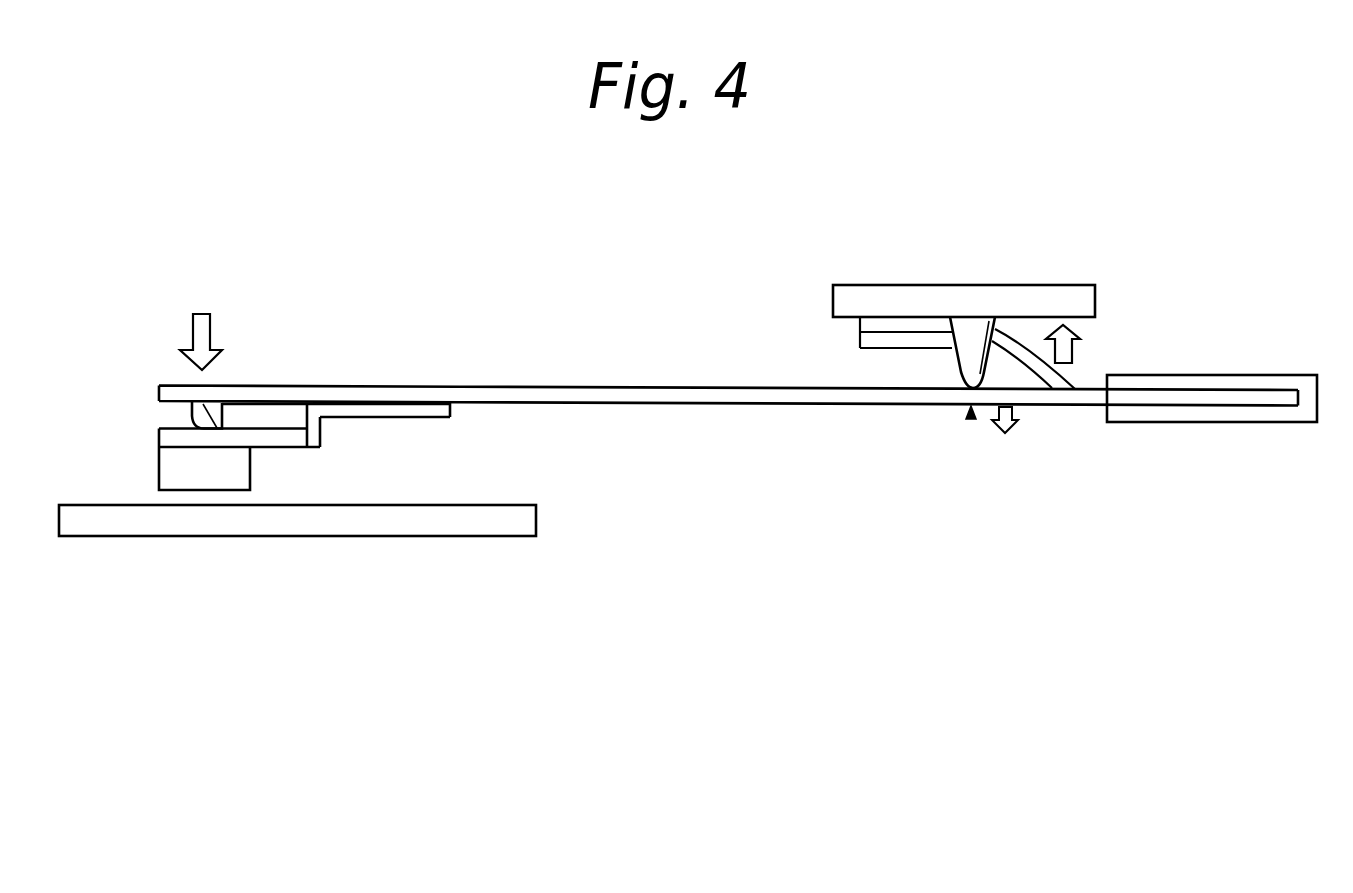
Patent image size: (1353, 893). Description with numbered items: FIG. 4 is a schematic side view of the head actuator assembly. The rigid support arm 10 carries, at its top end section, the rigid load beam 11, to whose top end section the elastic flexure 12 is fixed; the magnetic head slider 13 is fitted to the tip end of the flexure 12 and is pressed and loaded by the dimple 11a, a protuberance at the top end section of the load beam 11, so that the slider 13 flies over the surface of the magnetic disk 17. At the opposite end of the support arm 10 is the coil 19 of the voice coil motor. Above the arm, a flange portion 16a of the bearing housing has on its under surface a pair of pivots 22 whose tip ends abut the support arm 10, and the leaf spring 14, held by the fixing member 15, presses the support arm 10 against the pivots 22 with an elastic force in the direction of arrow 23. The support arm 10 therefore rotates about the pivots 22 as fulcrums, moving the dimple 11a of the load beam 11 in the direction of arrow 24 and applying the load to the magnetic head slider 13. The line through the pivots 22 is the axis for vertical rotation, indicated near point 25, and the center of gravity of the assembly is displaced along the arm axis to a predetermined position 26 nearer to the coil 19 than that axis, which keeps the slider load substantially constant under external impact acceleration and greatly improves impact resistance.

The support arm 10 is at (727, 395).
The load beam 11 is at (395, 393).
The dimple 11a is at (207, 415).
The flexure 12 is at (297, 440).
The magnetic head slider 13 is at (180, 470).
The leaf spring 14 is at (867, 338).
The fixing member 15 is at (867, 327).
The flange portion 16a is at (1062, 295).
The magnetic disk 17 is at (537, 523).
The coil 19 is at (1320, 398).
The pivots 22 is at (968, 358).
The arrow 23 is at (1072, 350).
The arrow 24 is at (198, 342).
The reaction point 25 is at (971, 412).
The predetermined position 26 is at (1017, 415).